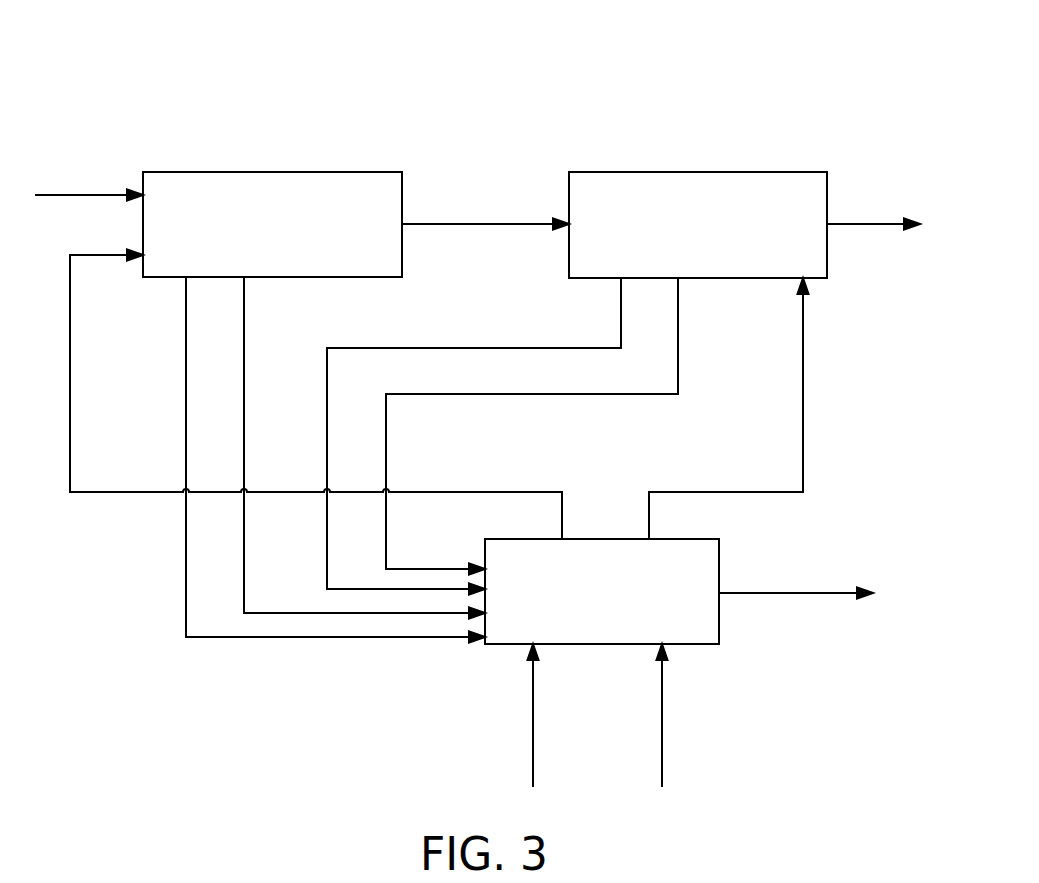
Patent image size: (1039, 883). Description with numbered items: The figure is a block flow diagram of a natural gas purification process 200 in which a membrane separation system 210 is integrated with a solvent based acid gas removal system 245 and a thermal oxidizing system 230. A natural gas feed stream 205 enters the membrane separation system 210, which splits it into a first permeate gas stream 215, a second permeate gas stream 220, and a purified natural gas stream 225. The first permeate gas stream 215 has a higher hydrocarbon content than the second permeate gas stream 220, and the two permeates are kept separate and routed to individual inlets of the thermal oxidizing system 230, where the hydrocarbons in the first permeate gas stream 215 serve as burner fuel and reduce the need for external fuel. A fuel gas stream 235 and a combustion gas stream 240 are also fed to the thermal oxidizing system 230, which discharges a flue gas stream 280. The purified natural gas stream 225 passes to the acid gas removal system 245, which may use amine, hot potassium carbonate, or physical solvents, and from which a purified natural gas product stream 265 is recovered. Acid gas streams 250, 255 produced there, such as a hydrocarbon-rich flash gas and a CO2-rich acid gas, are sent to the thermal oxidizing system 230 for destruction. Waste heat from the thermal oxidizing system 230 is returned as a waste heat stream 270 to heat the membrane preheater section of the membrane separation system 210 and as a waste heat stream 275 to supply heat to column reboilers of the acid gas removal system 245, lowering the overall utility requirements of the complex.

The natural gas purification process 200 is at (845, 59).
The natural gas feed stream 205 is at (90, 190).
The membrane separation system 210 is at (272, 170).
The first permeate gas stream 215 is at (184, 390).
The second permeate gas stream 220 is at (242, 418).
The purified natural gas stream 225 is at (485, 222).
The thermal oxidizing system 230 is at (607, 536).
The fuel gas stream 235 is at (532, 716).
The combustion gas stream 240 is at (664, 716).
The solvent based acid gas removal system 245 is at (697, 170).
The acid gas stream 250 is at (524, 346).
The acid gas stream 255 is at (679, 378).
The purified natural gas product stream 265 is at (866, 222).
The waste heat stream 270 is at (544, 499).
The waste heat stream 275 is at (676, 495).
The flue gas stream 280 is at (803, 590).